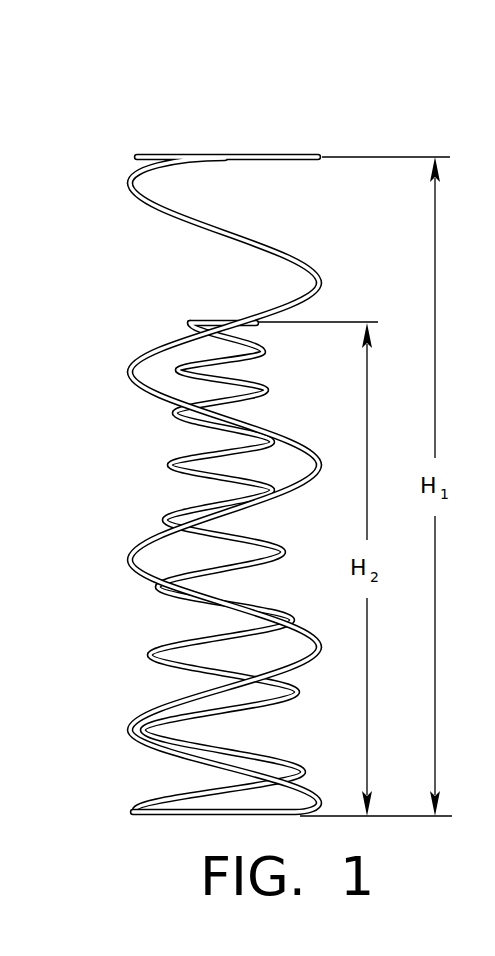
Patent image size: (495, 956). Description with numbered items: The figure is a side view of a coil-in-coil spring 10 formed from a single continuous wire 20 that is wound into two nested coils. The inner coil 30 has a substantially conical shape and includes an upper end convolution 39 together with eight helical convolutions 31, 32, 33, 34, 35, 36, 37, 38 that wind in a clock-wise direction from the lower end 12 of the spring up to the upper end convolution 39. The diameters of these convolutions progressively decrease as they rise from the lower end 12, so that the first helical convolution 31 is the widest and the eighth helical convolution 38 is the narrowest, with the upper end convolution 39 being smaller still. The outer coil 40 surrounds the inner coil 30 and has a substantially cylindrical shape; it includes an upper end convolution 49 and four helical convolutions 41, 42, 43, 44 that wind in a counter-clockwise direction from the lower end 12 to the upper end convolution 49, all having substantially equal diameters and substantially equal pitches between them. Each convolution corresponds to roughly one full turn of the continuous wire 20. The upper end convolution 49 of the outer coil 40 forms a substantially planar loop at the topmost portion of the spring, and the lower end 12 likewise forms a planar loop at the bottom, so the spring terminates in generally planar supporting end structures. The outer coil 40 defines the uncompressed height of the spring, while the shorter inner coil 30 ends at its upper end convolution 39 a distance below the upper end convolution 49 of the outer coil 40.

The coil-in-coil spring 10 is at (86, 104).
The lower end 12 is at (170, 815).
The continuous wire 20 is at (127, 178).
The inner coil 30 is at (170, 463).
The first helical convolution 31 is at (282, 758).
The second helical convolution 32 is at (292, 684).
The third helical convolution 33 is at (273, 607).
The fourth helical convolution 34 is at (265, 540).
The fifth helical convolution 35 is at (272, 483).
The sixth helical convolution 36 is at (265, 430).
The seventh helical convolution 37 is at (266, 388).
The eighth helical convolution 38 is at (266, 350).
The upper end convolution 39 is at (260, 332).
The outer coil 40 is at (125, 368).
The first helical convolution 41 is at (127, 752).
The second helical convolution 42 is at (128, 553).
The third helical convolution 43 is at (153, 397).
The fourth helical convolution 44 is at (190, 228).
The upper end convolution 49 is at (142, 152).